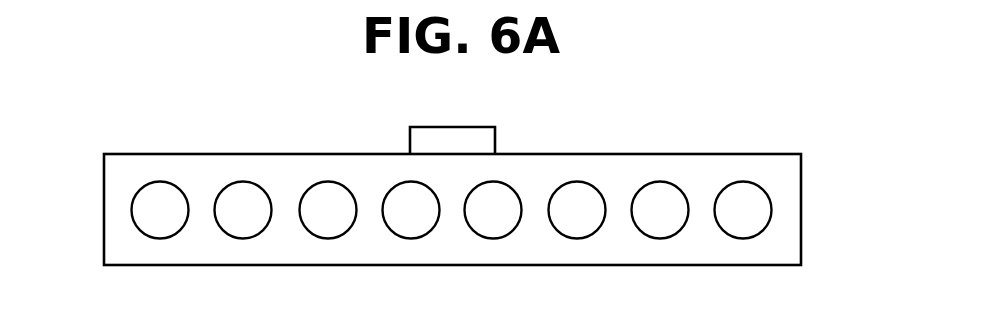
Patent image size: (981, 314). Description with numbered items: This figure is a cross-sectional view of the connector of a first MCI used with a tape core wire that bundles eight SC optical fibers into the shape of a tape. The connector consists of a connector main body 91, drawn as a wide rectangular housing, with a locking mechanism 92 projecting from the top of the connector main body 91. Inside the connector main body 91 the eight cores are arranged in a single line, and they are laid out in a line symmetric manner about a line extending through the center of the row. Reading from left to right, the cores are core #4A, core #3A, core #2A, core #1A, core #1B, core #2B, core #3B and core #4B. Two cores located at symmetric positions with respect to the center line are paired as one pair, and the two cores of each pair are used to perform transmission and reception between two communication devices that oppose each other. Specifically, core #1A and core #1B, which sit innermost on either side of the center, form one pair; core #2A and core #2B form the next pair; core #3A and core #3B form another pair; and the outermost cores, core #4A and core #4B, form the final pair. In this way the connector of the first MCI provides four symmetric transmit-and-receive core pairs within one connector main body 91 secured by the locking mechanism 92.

The connector main body 91 is at (803, 210).
The locking mechanism 92 is at (496, 127).
The core # 1A is at (411, 210).
The core # 1B is at (493, 210).
The core # 2A is at (328, 210).
The core # 2B is at (577, 210).
The core # 3A is at (243, 210).
The core # 3B is at (660, 210).
The core # 4A is at (160, 210).
The core # 4B is at (743, 210).